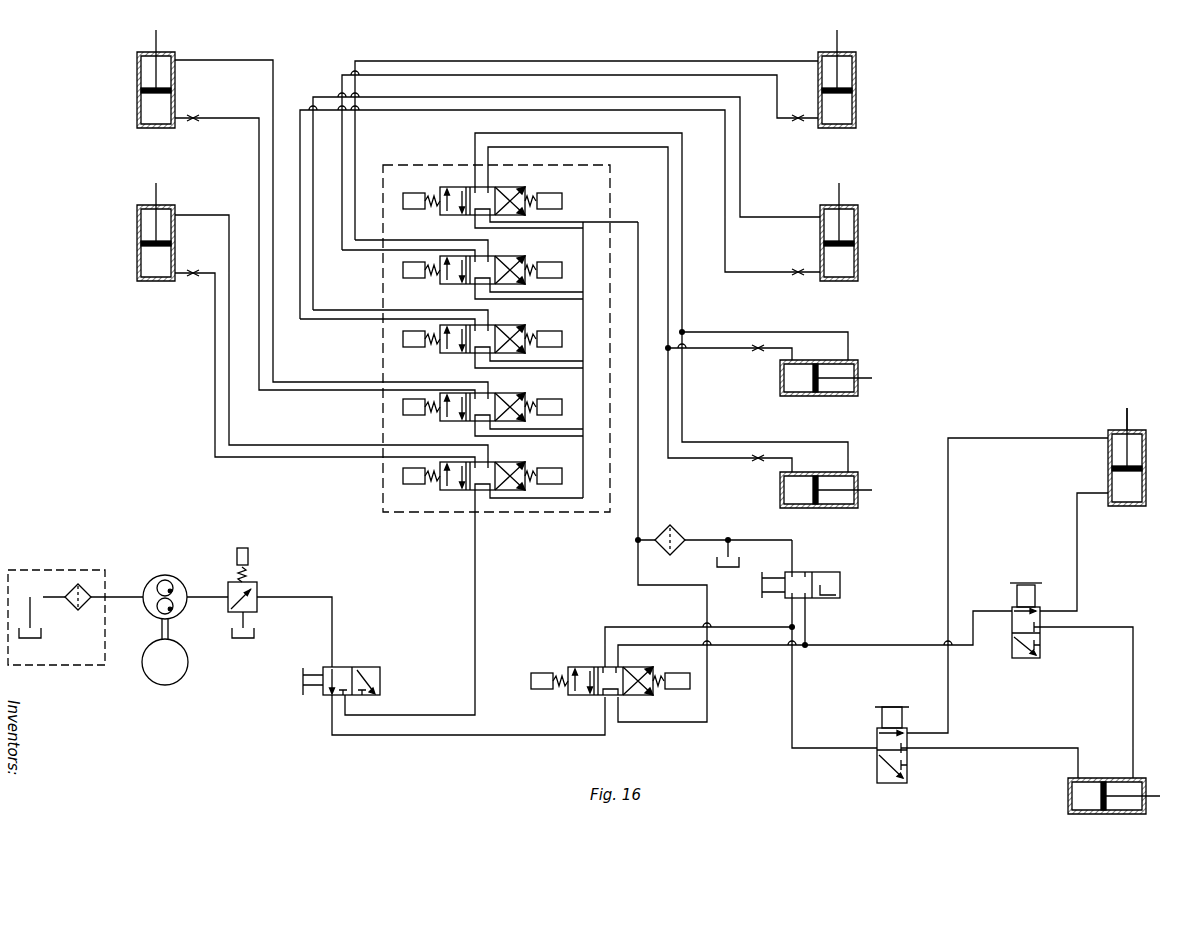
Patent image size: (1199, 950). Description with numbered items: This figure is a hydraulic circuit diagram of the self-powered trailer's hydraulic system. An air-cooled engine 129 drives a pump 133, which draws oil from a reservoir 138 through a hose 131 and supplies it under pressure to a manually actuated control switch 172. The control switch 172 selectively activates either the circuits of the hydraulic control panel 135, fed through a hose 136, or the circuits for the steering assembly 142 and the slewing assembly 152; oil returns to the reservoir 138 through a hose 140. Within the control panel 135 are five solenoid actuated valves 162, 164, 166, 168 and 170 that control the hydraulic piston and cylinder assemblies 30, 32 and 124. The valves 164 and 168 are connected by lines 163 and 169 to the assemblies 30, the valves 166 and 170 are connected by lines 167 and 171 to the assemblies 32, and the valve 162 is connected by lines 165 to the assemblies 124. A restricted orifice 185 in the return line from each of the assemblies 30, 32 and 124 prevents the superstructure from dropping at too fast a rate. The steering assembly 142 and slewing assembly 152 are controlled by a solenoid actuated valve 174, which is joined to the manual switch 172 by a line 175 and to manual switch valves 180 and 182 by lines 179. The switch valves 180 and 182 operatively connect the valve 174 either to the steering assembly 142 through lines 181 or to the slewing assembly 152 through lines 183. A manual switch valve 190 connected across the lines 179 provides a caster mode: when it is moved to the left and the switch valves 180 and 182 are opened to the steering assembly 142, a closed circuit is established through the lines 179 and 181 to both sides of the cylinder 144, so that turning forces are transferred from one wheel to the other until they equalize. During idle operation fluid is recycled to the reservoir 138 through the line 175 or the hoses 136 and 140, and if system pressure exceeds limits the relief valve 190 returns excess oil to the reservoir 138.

The hydraulic piston and cylinder assemblies 30 is at (136, 93).
The hydraulic piston and cylinder assemblies 32 is at (136, 245).
The hydraulic piston and cylinder assemblies 124 is at (860, 362).
The air-cooled engine 129 is at (176, 682).
The hose 131 is at (121, 595).
The pump 133 is at (181, 580).
The hydraulic control panel 135 is at (374, 471).
The hose 136 is at (470, 562).
The reservoir 138 is at (40, 646).
The hose 140 is at (694, 532).
The steering assembly 142 is at (1106, 464).
The cylinder 144 is at (1124, 420).
The slewing assembly 152 is at (1112, 765).
The solenoid actuated valve 162 is at (521, 191).
The lines 163 is at (563, 72).
The solenoid actuated valve 164 is at (521, 260).
The lines 165 is at (684, 312).
The solenoid actuated valve 166 is at (521, 329).
The lines 167 is at (727, 205).
The solenoid actuated valve 168 is at (521, 397).
The lines 169 is at (272, 157).
The solenoid actuated valve 170 is at (521, 466).
The lines 171 is at (310, 456).
The manually actuated control switch 172 is at (350, 666).
The solenoid actuated valve 174 is at (592, 666).
The line 175 is at (520, 738).
The lines 179 is at (795, 680).
The manual switch valve 180 is at (876, 760).
The lines 181 is at (1079, 563).
The manual switch valve 182 is at (1042, 650).
The lines 183 is at (1135, 712).
The restricted orifice 185 is at (193, 122).
The manual switch valve 190 is at (259, 572).